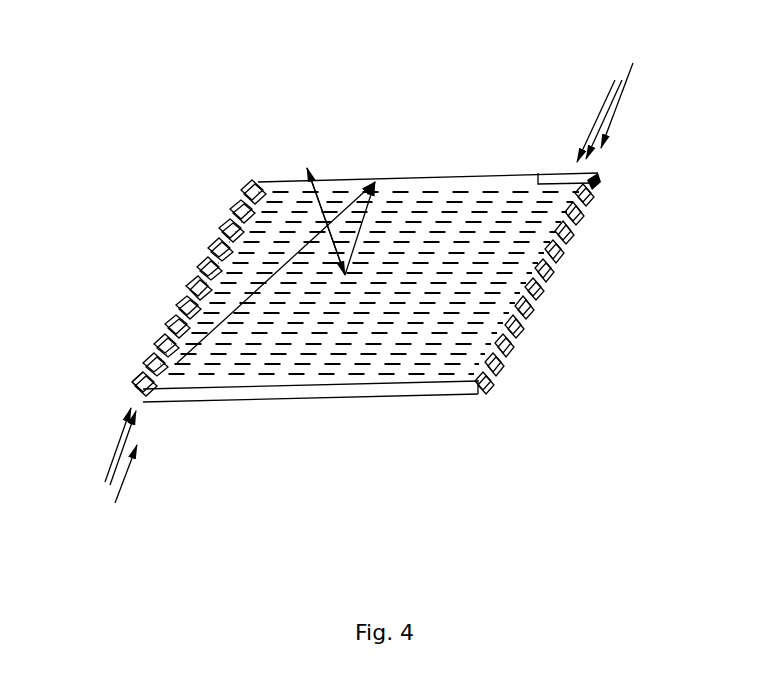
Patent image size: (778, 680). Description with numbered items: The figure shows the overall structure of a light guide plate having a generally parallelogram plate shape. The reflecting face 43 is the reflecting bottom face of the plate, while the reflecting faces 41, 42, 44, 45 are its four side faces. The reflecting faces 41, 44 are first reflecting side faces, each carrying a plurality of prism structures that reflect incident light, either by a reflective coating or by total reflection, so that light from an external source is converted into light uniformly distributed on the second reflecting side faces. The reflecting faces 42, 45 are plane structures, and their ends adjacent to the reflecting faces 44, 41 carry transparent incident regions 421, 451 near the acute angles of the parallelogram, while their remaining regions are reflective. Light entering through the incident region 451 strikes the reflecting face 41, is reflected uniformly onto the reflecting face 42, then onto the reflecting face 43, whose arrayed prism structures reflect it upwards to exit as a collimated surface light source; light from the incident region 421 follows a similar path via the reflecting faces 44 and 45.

The reflecting face 41 is at (197, 317).
The reflecting face 42 is at (427, 173).
The incident region 421 is at (603, 183).
The reflecting face 43 is at (428, 340).
The reflecting face 44 is at (523, 327).
The reflecting face 45 is at (330, 388).
The incident region 451 is at (163, 397).